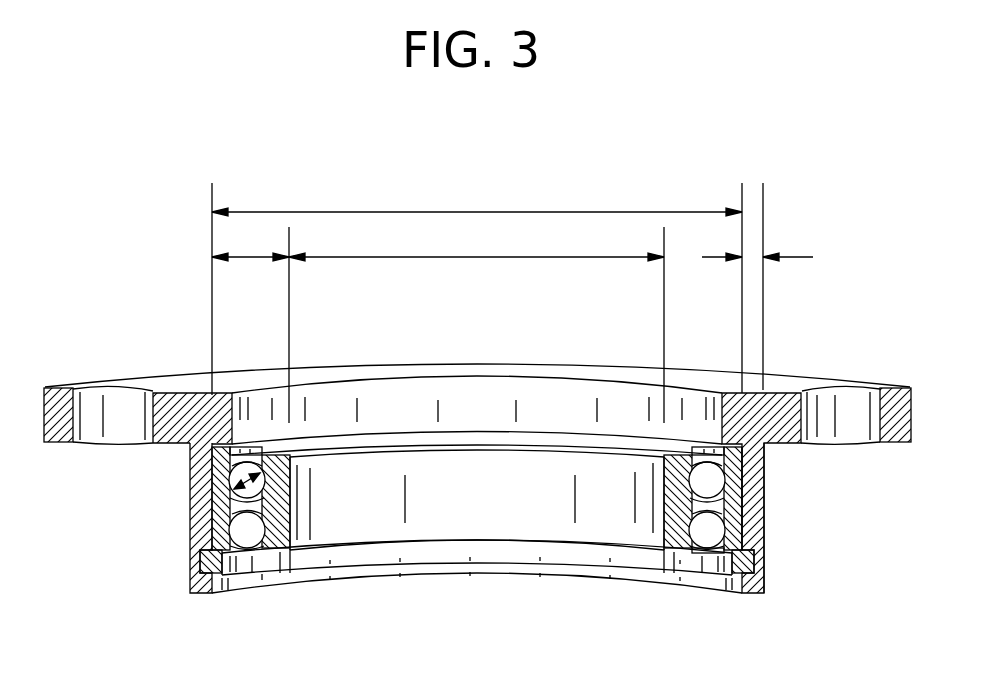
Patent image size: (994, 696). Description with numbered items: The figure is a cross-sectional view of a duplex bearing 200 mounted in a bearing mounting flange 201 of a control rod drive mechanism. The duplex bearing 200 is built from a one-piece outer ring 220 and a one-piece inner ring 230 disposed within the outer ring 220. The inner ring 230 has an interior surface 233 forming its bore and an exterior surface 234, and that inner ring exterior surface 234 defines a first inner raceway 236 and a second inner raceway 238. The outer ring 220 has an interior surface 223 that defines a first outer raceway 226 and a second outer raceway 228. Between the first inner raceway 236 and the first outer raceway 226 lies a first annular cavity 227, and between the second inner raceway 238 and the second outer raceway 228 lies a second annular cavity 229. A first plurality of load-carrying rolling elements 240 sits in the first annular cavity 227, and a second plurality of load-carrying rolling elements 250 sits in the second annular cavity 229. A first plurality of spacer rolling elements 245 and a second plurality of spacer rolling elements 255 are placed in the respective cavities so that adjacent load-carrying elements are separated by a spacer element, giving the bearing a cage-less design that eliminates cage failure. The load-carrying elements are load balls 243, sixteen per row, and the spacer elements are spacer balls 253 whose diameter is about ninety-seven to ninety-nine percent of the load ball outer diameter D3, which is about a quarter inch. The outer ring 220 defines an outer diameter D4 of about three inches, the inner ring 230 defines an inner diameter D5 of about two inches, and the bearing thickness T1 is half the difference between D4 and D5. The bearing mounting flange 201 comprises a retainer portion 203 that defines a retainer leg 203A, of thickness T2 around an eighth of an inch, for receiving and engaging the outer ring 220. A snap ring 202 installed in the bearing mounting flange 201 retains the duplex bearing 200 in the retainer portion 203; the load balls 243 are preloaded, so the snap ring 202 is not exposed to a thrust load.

The duplex bearing 200 is at (323, 558).
The bearing mounting flange 201 is at (138, 383).
The snap ring 202 is at (763, 573).
The retainer portion 203 is at (177, 413).
The retainer leg 203A is at (758, 553).
The outer ring 220 is at (200, 520).
The outer ring interior surface 223 is at (698, 447).
The first outer raceway 226 is at (718, 553).
The first annular cavity 227 is at (703, 548).
The second outer raceway 228 is at (736, 447).
The second annular cavity 229 is at (752, 505).
The inner ring 230 is at (277, 566).
The inner ring interior surface 233 is at (457, 523).
The inner ring exterior surface 234 is at (283, 522).
The first inner raceway 236 is at (657, 548).
The second inner raceway 238 is at (700, 466).
The first plurality of load-carrying rolling elements 240 is at (213, 541).
The load balls 243 is at (230, 486).
The first plurality of spacer rolling elements 245 is at (752, 557).
The second plurality of load-carrying rolling elements 250 is at (215, 467).
The spacer balls 253 is at (690, 462).
The second plurality of spacer rolling elements 255 is at (737, 487).
The outer diameter of load balls D3 is at (247, 468).
The outer diameter of outer ring D4 is at (477, 287).
The inner diameter of inner ring D5 is at (476, 324).
The thickness of duplex bearing T1 is at (212, 257).
The thickness of retainer leg T2 is at (800, 257).